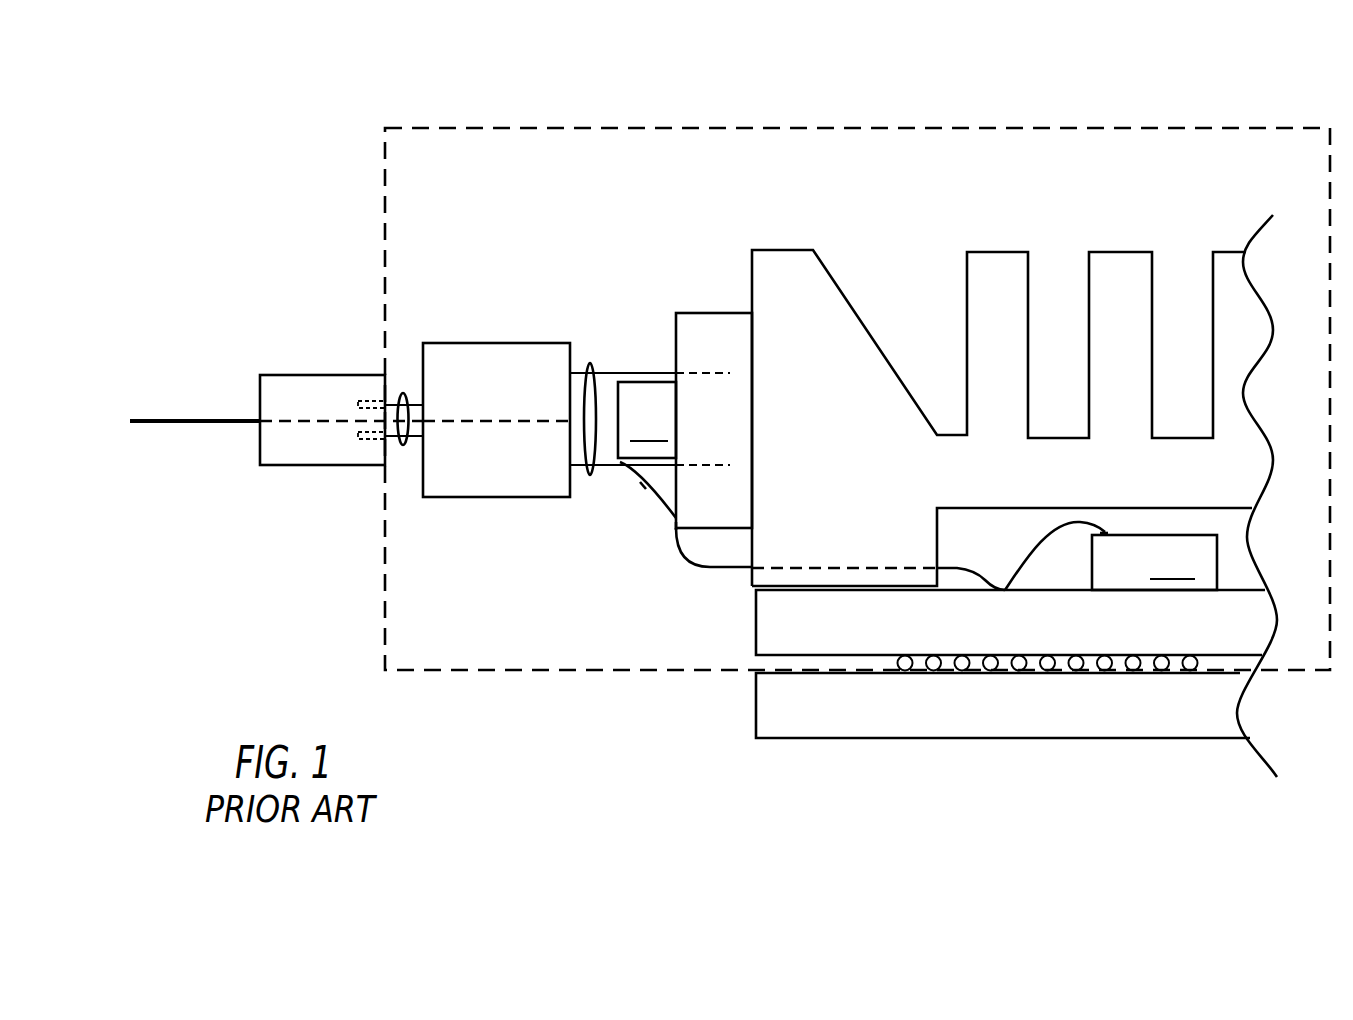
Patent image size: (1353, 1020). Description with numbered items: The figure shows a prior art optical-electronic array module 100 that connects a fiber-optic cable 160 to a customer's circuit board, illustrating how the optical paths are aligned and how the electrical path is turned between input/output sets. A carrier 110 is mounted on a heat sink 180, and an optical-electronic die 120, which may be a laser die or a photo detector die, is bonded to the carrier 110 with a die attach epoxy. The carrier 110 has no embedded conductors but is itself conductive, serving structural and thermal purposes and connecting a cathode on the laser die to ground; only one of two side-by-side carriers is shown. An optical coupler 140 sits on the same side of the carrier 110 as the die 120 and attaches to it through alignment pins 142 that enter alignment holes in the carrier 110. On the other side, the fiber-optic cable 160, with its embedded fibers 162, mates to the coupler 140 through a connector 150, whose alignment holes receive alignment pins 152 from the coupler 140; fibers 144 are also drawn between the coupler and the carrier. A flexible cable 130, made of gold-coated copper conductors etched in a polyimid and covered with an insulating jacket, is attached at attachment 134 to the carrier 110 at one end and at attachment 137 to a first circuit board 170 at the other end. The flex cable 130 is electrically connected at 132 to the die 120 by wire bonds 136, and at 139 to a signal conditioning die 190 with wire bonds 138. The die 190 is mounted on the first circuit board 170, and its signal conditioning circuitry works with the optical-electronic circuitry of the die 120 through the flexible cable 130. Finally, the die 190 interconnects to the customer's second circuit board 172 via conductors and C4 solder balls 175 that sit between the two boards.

The module 100 is at (385, 128).
The carrier 110 is at (728, 312).
The optical-electronic die 120 is at (647, 420).
The flexible cable 130 is at (727, 568).
The electrical connection to die 120 132 is at (613, 452).
The attachment to carrier 134 is at (674, 528).
The wire bonds 136 is at (643, 485).
The attachment to first circuit board 137 is at (999, 586).
The wire bonds 138 is at (1043, 543).
The electrical connection to die 190 139 is at (1108, 533).
The optical coupler 140 is at (513, 342).
The alignment pins 142 is at (591, 364).
The fibers 144 is at (498, 422).
The connector 150 is at (322, 467).
The alignment pins 152 is at (404, 392).
The fiber-optic cable 160 is at (197, 418).
The embedded fibers 162 is at (321, 419).
The first circuit board 170 is at (754, 657).
The second circuit board 172 is at (843, 738).
The C4 solder balls 175 is at (1082, 675).
The heat sink 180 is at (845, 298).
The signal conditioning die 190 is at (1154, 562).